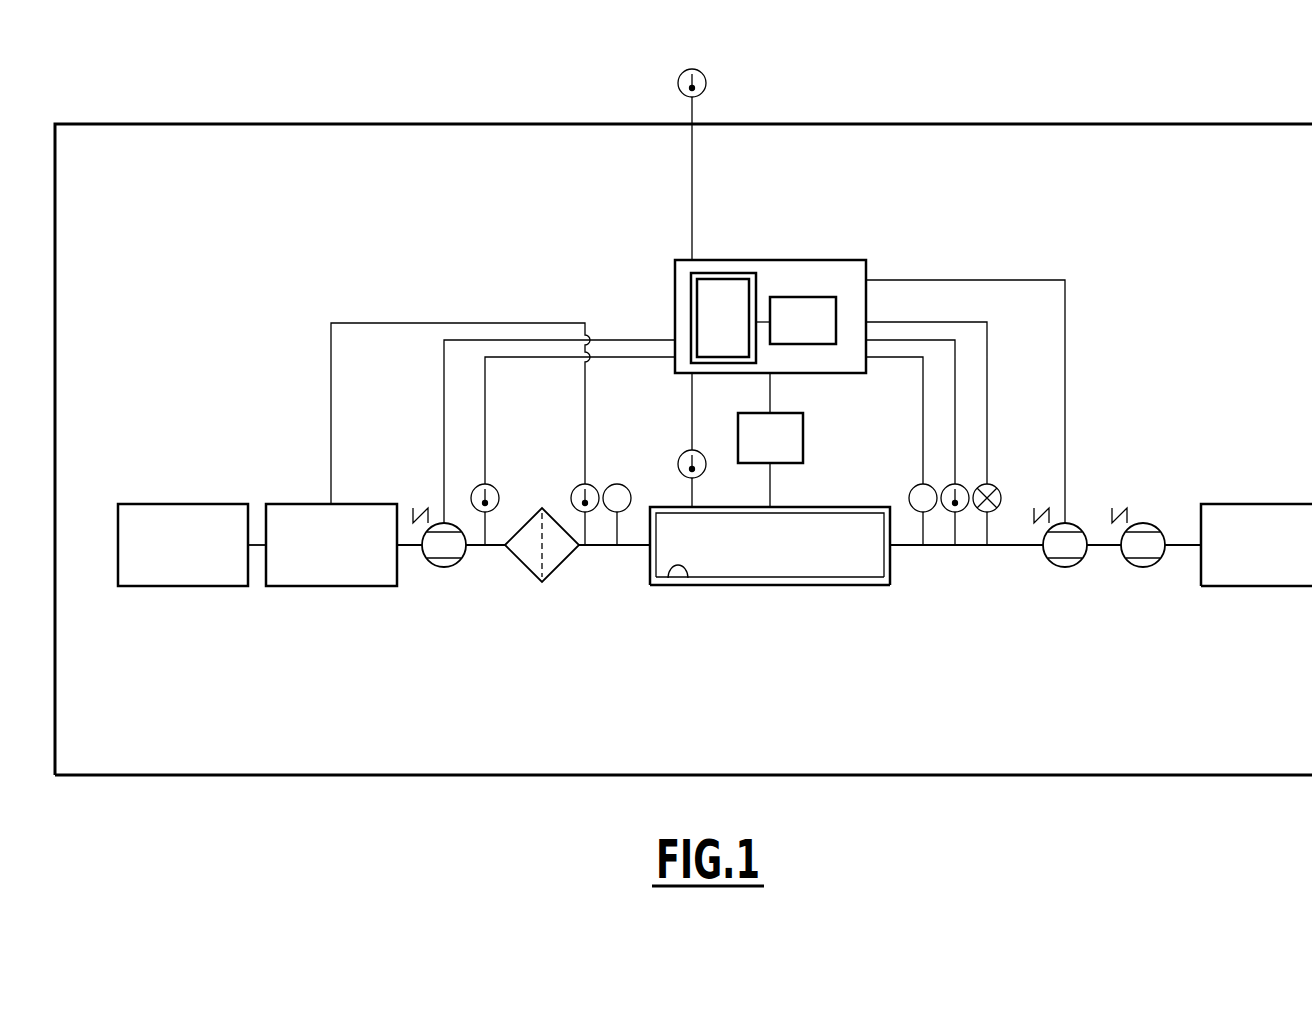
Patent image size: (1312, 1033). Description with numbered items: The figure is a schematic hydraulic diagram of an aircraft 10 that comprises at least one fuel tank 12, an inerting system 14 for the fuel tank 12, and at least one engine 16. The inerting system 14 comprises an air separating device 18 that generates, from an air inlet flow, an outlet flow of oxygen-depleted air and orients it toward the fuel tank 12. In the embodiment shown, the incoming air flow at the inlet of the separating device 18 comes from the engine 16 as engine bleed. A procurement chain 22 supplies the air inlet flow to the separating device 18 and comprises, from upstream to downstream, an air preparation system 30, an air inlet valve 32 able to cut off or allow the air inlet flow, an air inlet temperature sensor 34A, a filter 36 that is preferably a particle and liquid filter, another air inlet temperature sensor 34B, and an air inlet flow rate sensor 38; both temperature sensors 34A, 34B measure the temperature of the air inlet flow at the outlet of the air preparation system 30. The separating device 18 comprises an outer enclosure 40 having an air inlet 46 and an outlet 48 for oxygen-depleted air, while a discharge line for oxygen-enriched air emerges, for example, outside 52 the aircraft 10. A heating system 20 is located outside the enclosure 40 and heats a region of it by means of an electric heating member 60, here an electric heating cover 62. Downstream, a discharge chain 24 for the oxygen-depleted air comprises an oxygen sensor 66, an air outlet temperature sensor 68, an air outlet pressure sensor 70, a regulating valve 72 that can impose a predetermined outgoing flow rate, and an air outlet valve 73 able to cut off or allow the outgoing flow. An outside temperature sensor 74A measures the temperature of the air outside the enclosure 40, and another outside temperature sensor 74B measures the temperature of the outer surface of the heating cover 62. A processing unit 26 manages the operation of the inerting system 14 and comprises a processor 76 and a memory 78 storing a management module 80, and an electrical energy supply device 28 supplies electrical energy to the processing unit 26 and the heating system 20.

The aircraft 10 is at (355, 122).
The fuel tank 12 is at (1249, 559).
The inerting system 14 is at (928, 262).
The engine 16 is at (170, 559).
The air separating device 18 is at (822, 560).
The heating system 20 is at (748, 590).
The procurement chain 22 is at (372, 605).
The discharge chain 24 is at (1018, 568).
The processing unit 26 is at (788, 260).
The electrical energy supply device 28 is at (757, 454).
The air preparation system 30 is at (318, 559).
The air inlet valve 32 is at (437, 568).
The air inlet temperature sensor 34A is at (490, 483).
The air inlet temperature sensor 34B is at (578, 483).
The filter 36 is at (535, 585).
The air inlet flow rate sensor 38 is at (617, 483).
The outer enclosure 40 is at (685, 583).
The air inlet 46 is at (645, 550).
The outlet 48 is at (895, 560).
The outside 52 is at (684, 36).
The electric heating member 60 is at (787, 639).
The electric heating cover 62 is at (807, 585).
The oxygen sensor 66 is at (910, 460).
The air outlet temperature sensor 68 is at (948, 480).
The air outlet pressure sensor 70 is at (978, 480).
The regulating valve 72 is at (1047, 497).
The air outlet valve 73 is at (1165, 497).
The outside temperature sensor 74A is at (725, 80).
The outside temperature sensor 74B is at (686, 452).
The processor 76 is at (790, 338).
The memory 78 is at (691, 315).
The management module 80 is at (710, 338).